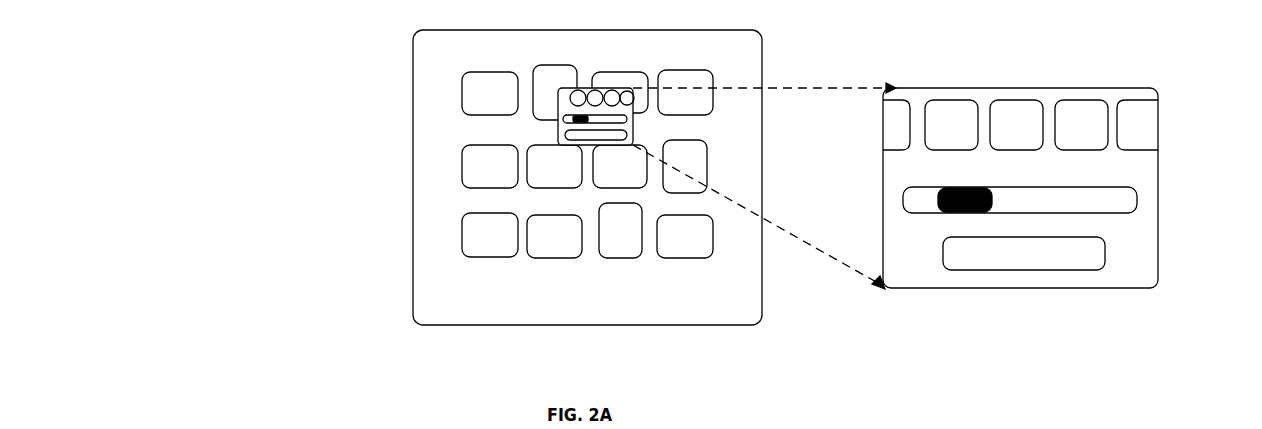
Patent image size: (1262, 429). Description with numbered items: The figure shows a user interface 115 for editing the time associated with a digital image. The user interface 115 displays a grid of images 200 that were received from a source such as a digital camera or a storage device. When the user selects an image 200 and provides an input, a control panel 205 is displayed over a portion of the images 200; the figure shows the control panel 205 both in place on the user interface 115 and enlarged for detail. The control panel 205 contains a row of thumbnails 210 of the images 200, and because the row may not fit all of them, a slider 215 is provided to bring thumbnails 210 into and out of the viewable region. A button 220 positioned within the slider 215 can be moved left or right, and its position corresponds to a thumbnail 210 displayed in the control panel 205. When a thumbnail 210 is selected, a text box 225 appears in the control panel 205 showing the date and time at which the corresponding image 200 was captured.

The user interface 115 is at (413, 92).
The images 200 is at (618, 237).
The control panel 205 is at (763, 176).
The thumbnails 210 is at (1018, 118).
The slider 215 is at (1113, 213).
The button 220 is at (1090, 184).
The text box 225 is at (1092, 284).